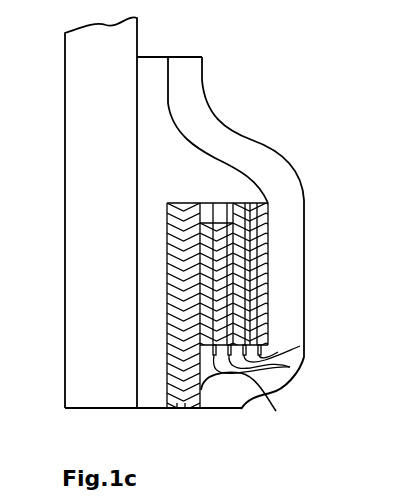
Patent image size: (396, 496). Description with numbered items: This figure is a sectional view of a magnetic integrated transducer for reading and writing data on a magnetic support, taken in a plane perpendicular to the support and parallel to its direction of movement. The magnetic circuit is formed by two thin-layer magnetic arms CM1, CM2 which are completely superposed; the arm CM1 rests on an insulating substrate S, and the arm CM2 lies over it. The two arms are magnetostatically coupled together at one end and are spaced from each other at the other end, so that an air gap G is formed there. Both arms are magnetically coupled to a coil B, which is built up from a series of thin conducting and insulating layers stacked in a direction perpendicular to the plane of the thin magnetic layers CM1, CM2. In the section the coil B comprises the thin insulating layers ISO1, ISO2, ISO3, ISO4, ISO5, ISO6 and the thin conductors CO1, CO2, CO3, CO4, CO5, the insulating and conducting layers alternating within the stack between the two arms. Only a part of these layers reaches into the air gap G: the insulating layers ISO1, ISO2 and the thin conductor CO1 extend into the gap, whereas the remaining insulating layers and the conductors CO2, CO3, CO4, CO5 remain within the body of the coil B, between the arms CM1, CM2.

The insulating substrate S is at (80, 170).
The magnetic arm CM1 is at (158, 70).
The magnetic arm CM2 is at (197, 90).
The thin insulating layer ISO1 is at (168, 203).
The thin insulating layer ISO2 is at (193, 203).
The thin insulating layer ISO3 is at (212, 203).
The thin insulating layer ISO4 is at (233, 203).
The thin insulating layer ISO5 is at (268, 212).
The thin insulating layer ISO6 is at (268, 245).
The coil B is at (268, 226).
The air gap G is at (177, 410).
The thin conductor CO1 is at (185, 410).
The thin conductor CO2 is at (261, 403).
The thin conductor CO3 is at (282, 391).
The thin conductor CO4 is at (290, 367).
The thin conductor CO5 is at (300, 346).